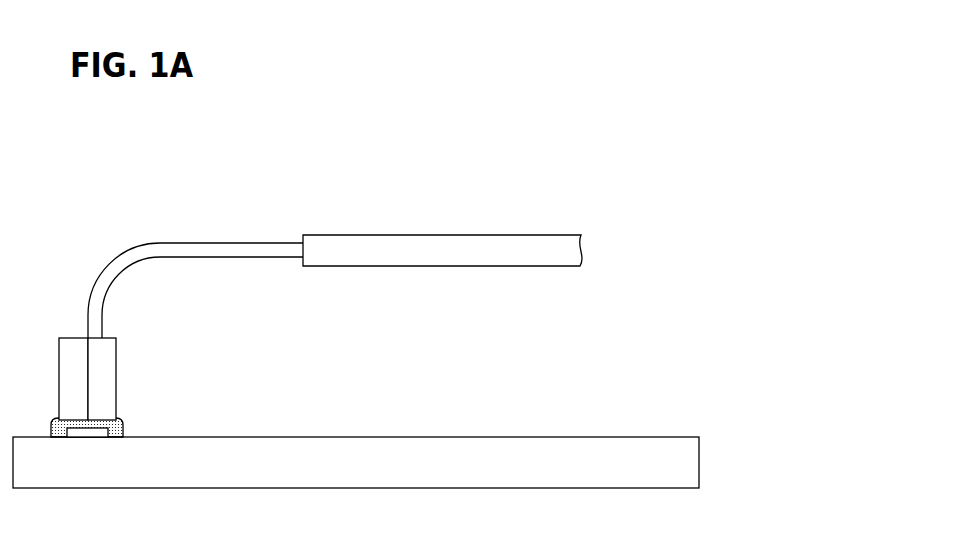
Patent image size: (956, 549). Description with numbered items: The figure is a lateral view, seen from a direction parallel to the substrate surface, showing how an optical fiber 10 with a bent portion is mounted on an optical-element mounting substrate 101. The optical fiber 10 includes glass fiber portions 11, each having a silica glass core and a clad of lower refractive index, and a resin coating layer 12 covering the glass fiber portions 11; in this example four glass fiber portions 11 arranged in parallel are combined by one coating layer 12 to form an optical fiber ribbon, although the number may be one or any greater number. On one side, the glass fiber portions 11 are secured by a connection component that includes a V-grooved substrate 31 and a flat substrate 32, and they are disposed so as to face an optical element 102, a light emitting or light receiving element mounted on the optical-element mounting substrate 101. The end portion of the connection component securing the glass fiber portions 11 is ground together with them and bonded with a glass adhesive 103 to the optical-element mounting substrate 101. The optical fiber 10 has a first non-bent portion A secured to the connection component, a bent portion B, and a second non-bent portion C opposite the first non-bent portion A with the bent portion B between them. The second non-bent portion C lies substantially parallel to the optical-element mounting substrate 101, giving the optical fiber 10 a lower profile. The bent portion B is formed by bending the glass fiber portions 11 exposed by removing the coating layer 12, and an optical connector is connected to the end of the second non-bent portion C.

The optical fiber 10 is at (216, 192).
The glass fiber portions 11 is at (232, 246).
The resin coating layer 12 is at (390, 240).
The V-grooved substrate 31 is at (105, 373).
The flat substrate 32 is at (68, 373).
The optical-element mounting substrate 101 is at (596, 445).
The optical element 102 is at (86, 432).
The glass adhesive 103 is at (123, 424).
The first non-bent portion A is at (82, 327).
The bent portion B is at (118, 253).
The second non-bent portion C is at (253, 262).